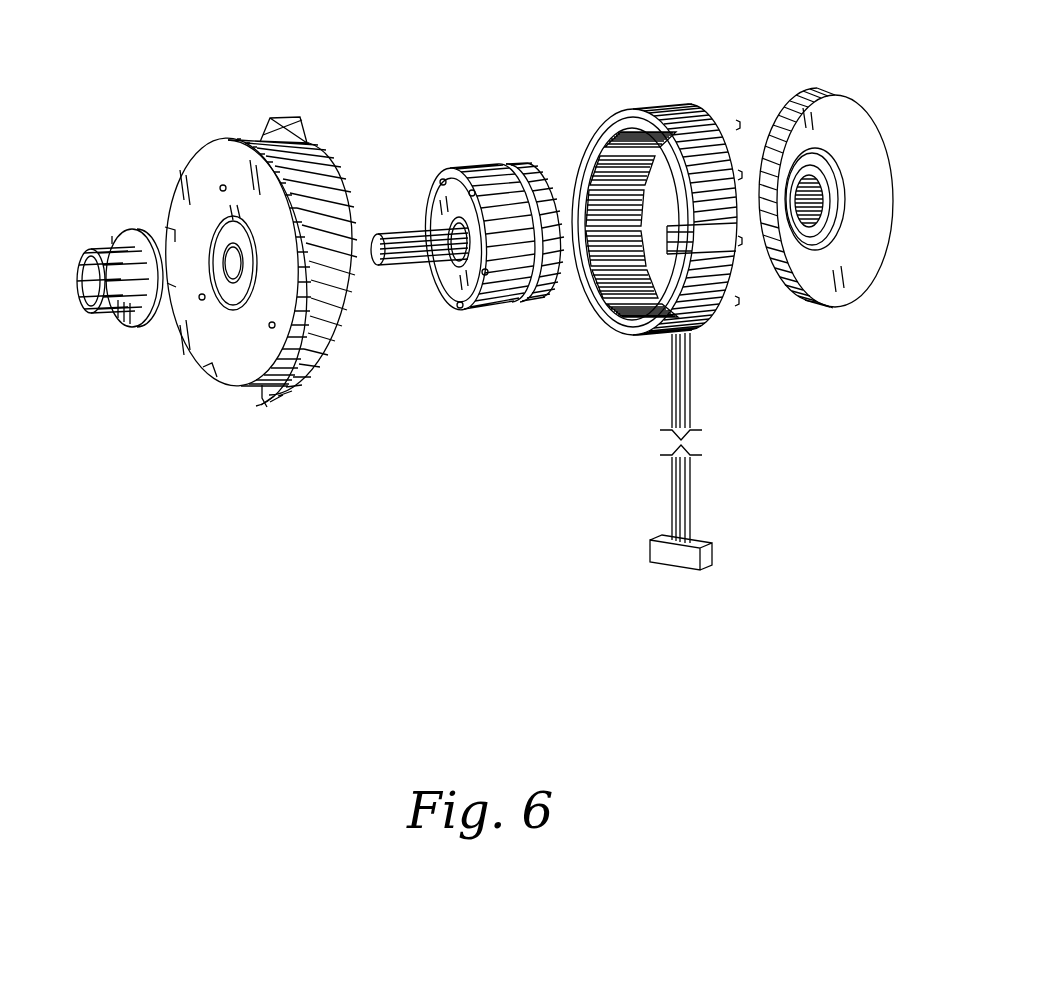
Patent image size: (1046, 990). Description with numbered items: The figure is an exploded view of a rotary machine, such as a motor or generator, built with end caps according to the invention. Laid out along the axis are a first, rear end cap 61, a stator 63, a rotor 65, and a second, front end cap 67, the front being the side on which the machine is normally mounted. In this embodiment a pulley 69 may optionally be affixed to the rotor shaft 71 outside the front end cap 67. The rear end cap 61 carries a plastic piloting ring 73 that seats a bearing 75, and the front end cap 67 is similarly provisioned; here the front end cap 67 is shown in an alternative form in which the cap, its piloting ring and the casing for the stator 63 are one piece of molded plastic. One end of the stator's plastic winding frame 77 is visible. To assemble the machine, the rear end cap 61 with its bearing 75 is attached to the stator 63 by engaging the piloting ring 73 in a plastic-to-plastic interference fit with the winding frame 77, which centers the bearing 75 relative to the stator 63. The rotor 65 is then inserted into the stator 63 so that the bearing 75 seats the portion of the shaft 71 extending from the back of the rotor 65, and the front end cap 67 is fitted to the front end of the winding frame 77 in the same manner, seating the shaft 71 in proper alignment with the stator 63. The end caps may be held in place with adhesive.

The rear end cap 61 is at (786, 113).
The stator 63 is at (649, 336).
The rotor 65 is at (475, 310).
The front end cap 67 is at (273, 408).
The pulley 69 is at (132, 327).
The rotor shaft 71 is at (386, 233).
The plastic piloting ring 73 is at (815, 158).
The bearing 75 is at (794, 204).
The plastic winding frame 77 is at (582, 141).